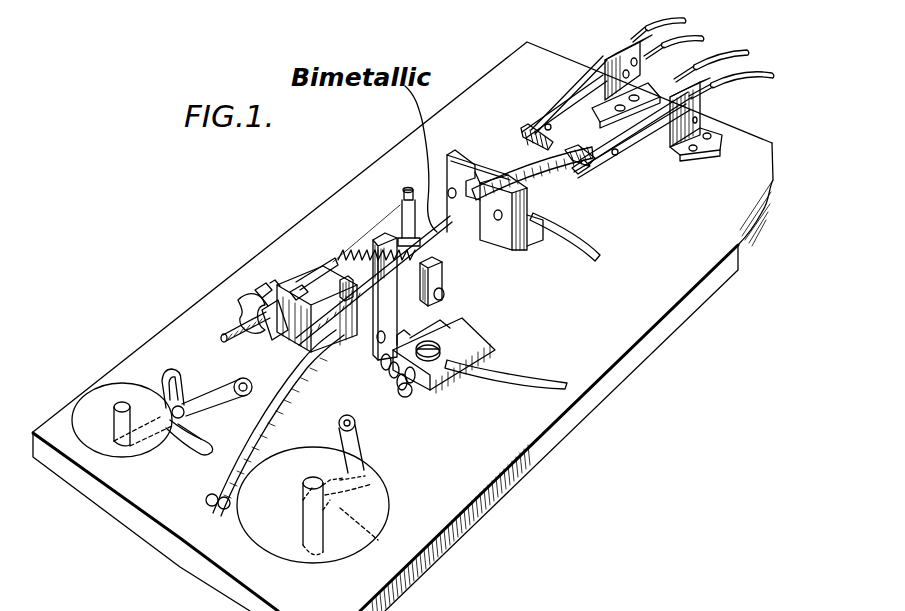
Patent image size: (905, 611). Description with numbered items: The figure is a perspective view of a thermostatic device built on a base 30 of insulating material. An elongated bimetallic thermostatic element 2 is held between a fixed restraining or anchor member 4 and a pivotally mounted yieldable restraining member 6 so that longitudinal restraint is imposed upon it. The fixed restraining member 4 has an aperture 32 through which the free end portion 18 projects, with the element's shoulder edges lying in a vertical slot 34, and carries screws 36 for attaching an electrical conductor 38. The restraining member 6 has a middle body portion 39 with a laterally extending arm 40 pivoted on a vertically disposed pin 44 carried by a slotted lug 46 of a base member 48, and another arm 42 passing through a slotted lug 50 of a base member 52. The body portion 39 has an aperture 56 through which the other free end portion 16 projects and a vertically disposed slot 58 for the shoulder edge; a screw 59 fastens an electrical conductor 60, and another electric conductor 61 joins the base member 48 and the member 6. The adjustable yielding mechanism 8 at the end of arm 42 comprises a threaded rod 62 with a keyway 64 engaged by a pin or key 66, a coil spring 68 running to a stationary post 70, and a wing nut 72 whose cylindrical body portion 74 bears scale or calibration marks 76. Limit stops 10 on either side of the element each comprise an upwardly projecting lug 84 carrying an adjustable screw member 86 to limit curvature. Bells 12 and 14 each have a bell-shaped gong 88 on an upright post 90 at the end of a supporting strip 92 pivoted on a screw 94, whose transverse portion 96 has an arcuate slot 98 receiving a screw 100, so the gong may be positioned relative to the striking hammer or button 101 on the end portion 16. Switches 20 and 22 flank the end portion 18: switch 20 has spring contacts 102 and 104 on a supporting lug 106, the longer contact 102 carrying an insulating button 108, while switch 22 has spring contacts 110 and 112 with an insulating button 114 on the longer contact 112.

The thermostatic element 2 is at (438, 230).
The fixed restraining member 4 is at (500, 228).
The pivotally mounted yieldable restraining member 6 is at (330, 372).
The adjustable yielding mechanism 8 is at (266, 277).
The adjustable limit stops 10 is at (385, 242).
The bell 12 is at (130, 457).
The bell 14 is at (300, 560).
The free end portion 16 is at (240, 452).
The free end portion 18 is at (563, 170).
The switch 20 is at (583, 52).
The control switch 22 is at (713, 105).
The base 30 is at (636, 327).
The aperture 32 is at (472, 200).
The vertical slot 34 is at (475, 165).
The screws 36 is at (530, 204).
The electrical conductor 38 is at (595, 243).
The middle body portion 39 is at (317, 309).
The laterally extending arm 40 is at (440, 333).
The laterally extending arm 42 is at (275, 325).
The vertically disposed pin 44 is at (388, 296).
The slotted lug 46 is at (412, 320).
The base member 48 is at (425, 375).
The slotted lug 50 is at (303, 285).
The base member 52 is at (325, 262).
The aperture 56 is at (308, 358).
The vertically disposed slot 58 is at (349, 289).
The screw 59 is at (440, 345).
The electrical conductor 60 is at (515, 370).
The electric conductor 61 is at (398, 395).
The threaded rod 62 is at (240, 322).
The keyway 64 is at (220, 338).
The pin or key 66 is at (276, 280).
The coil spring 68 is at (395, 222).
The stationary post 70 is at (408, 188).
The wing nut 72 is at (232, 300).
The cylindrical body portion 74 is at (262, 288).
The scale or calibration marks 76 is at (255, 296).
The upwardly projecting lug 84 is at (442, 272).
The screw member 86 is at (445, 293).
The bell-shaped gong 88 is at (390, 519).
The upright post 90 is at (300, 512).
The supporting strip 92 is at (378, 540).
The screw 94 is at (340, 420).
The transverse portion 96 is at (366, 476).
The arcuate slot 98 is at (372, 485).
The screw 100 is at (330, 470).
The striking hammer or button 101 is at (206, 505).
The spring contact 102 is at (578, 95).
The spring contact 104 is at (555, 100).
The supporting lug 106 is at (640, 110).
The insulating button 108 is at (518, 130).
The spring contact 110 is at (618, 135).
The spring contact 112 is at (632, 160).
The insulating button 114 is at (580, 180).